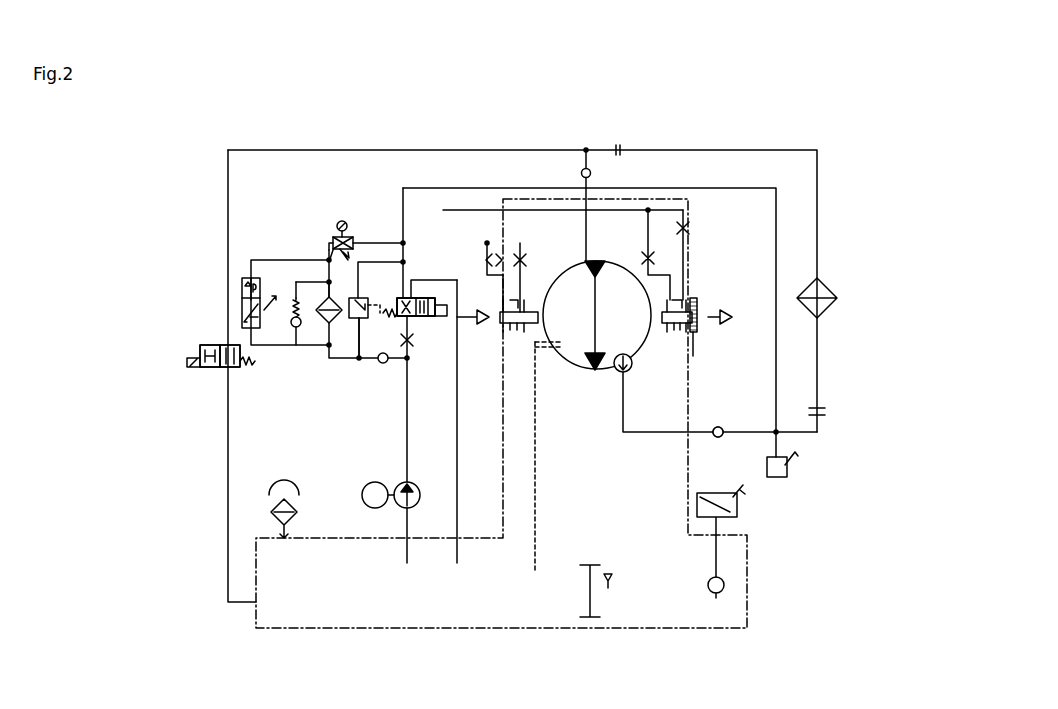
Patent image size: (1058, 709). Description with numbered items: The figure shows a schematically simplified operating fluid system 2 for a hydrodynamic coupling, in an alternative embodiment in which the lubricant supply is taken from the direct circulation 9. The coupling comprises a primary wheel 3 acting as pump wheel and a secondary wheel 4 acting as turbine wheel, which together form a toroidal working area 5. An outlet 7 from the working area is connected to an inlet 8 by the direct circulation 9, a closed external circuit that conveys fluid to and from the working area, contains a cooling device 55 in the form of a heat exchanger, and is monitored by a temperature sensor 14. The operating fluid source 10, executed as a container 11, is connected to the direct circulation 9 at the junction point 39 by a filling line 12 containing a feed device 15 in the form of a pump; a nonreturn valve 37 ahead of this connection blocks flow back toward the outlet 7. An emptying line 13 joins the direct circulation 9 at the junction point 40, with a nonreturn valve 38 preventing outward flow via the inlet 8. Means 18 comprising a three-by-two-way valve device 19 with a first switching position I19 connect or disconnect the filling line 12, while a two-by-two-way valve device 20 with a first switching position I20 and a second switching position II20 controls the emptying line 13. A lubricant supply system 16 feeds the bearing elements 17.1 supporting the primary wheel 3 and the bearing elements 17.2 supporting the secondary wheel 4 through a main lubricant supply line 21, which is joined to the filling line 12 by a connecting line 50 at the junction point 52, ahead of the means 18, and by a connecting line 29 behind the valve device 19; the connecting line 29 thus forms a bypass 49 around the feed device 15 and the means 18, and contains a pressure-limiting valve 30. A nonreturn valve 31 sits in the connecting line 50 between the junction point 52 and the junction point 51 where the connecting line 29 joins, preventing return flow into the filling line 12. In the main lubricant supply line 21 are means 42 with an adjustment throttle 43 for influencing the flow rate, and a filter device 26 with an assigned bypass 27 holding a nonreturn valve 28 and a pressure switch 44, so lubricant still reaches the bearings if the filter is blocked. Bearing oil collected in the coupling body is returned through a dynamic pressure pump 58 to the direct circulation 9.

The operating fluid system 2 is at (792, 138).
The primary wheel 3 is at (572, 365).
The secondary wheel 4 is at (623, 305).
The toroidal working area 5 is at (579, 339).
The outlet 7 is at (613, 370).
The inlet 8 is at (593, 256).
The direct circulation 9 is at (824, 187).
The operating fluid source 10 is at (353, 612).
The container 11 is at (296, 612).
The filling line 12 is at (409, 434).
The emptying line 13 is at (228, 457).
The temperature sensor 14 is at (799, 472).
The feed device 15 is at (407, 510).
The lubricant supply system 16 is at (692, 250).
The bearing elements 17.1 is at (518, 338).
The bearing elements 17.2 is at (666, 340).
The means to provide or interrupt flow 18 is at (416, 307).
The valve device 19 is at (433, 332).
The valve device 20 is at (203, 338).
The main lubricant supply line 21 is at (385, 262).
The filter device 26 is at (324, 302).
The bypass 27 is at (305, 273).
The nonreturn valve 28 is at (292, 325).
The connecting line 29 is at (397, 286).
The pressure-limiting valve 30 is at (330, 358).
The nonreturn valve 31 is at (380, 361).
The nonreturn valve 37 is at (824, 410).
The nonreturn valve 38 is at (591, 172).
The junction point 39 is at (728, 432).
The junction point 40 is at (586, 149).
The means for influencing the rate of flow 42 is at (345, 212).
The adjustment throttle 43 is at (358, 262).
The pressure switch 44 is at (238, 292).
The bypass 49 is at (350, 282).
The connecting line 50 is at (400, 360).
The junction point 51 is at (357, 359).
The junction point 52 is at (407, 350).
The cooling device 55 is at (828, 306).
The dynamic pressure pump 58 is at (617, 373).
The first switching position I19 is at (422, 296).
The first switching position I20 is at (207, 375).
The second switching position II20 is at (237, 375).